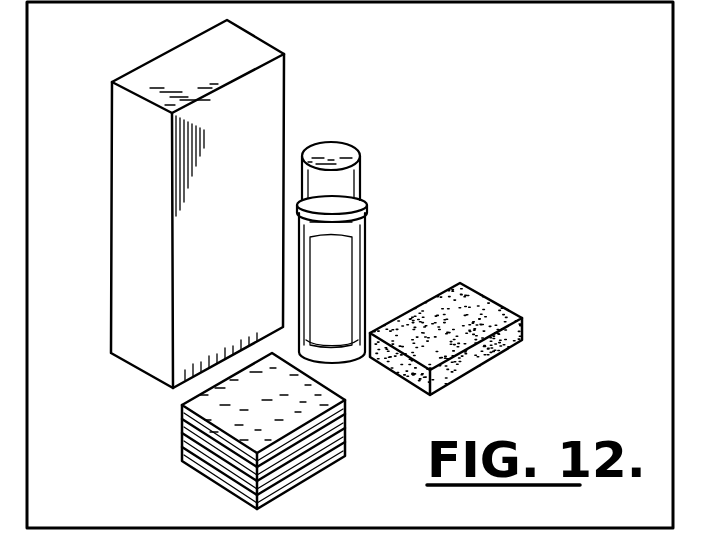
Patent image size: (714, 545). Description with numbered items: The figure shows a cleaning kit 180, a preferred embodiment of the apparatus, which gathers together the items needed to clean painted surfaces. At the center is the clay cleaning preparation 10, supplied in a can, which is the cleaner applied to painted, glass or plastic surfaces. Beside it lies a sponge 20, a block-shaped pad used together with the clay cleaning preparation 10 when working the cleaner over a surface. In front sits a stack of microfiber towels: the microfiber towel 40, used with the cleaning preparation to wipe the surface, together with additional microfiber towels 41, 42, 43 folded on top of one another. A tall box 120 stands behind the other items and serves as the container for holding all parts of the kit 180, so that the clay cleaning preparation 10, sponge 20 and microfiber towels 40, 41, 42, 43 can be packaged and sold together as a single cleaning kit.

The cleaning kit 180 is at (492, 105).
The box 120 is at (266, 100).
The clay cleaning preparation 10 is at (345, 218).
The sponge 20 is at (465, 298).
The microfiber towel 40 is at (180, 406).
The microfiber towel 41 is at (180, 422).
The microfiber towel 42 is at (180, 438).
The microfiber towel 43 is at (186, 458).